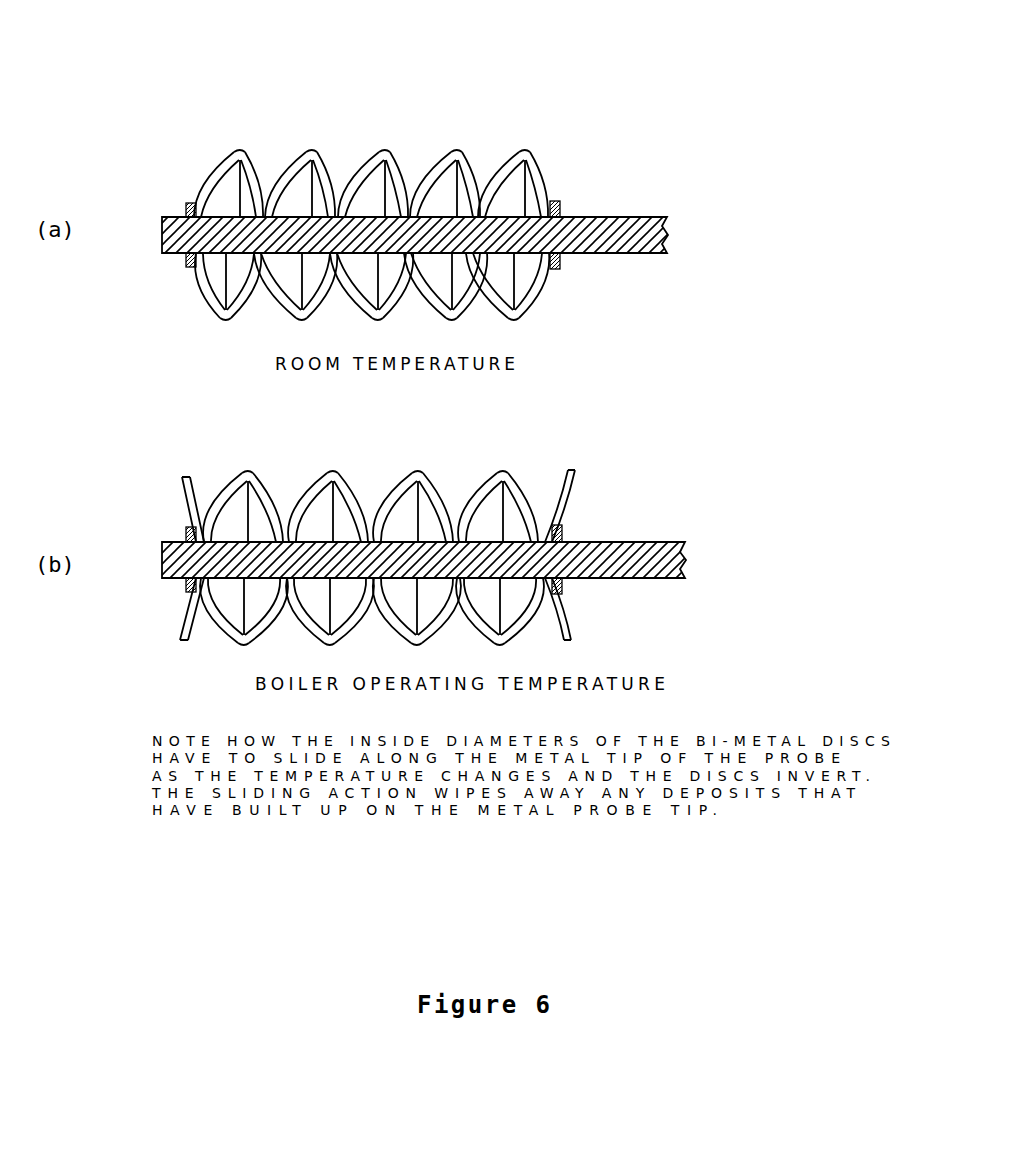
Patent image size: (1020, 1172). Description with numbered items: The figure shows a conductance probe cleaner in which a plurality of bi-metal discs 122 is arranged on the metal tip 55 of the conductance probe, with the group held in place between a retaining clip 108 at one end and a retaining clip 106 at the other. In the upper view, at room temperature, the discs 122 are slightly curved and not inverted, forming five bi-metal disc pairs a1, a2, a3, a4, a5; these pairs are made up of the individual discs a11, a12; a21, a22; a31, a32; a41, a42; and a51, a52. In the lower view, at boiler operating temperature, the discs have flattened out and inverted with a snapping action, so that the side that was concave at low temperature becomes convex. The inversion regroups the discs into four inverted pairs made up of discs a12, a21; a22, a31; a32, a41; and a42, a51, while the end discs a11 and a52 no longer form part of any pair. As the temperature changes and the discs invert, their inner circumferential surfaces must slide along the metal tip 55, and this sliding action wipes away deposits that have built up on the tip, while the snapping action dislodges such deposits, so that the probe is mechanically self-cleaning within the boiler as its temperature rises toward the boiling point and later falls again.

The bi-metal discs 122 is at (396, 56).
The retaining clip 108 is at (188, 204).
The retaining clip 106 is at (560, 205).
The metal tip 55 is at (633, 254).
The bi-metal disc pair a1 is at (184, 388).
The bi-metal disc pair a2 is at (296, 387).
The bi-metal disc pair a3 is at (377, 390).
The bi-metal disc pair a4 is at (453, 389).
The bi-metal disc pair a5 is at (551, 369).
The bi-metal disc a11 is at (205, 292).
The bi-metal disc a12 is at (251, 297).
The bi-metal disc a21 is at (292, 177).
The bi-metal disc a22 is at (325, 165).
The bi-metal disc a31 is at (353, 300).
The bi-metal disc a32 is at (398, 300).
The bi-metal disc a41 is at (440, 175).
The bi-metal disc a42 is at (468, 170).
The bi-metal disc a51 is at (488, 310).
The bi-metal disc a52 is at (532, 290).